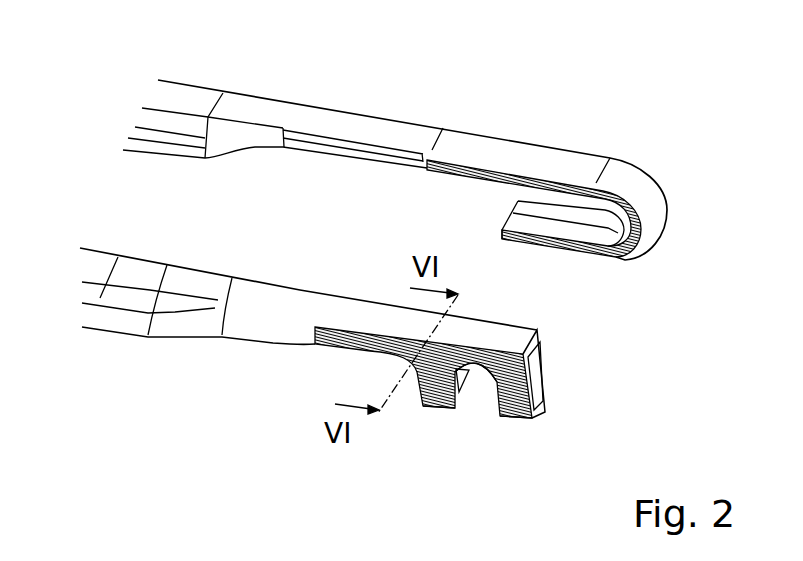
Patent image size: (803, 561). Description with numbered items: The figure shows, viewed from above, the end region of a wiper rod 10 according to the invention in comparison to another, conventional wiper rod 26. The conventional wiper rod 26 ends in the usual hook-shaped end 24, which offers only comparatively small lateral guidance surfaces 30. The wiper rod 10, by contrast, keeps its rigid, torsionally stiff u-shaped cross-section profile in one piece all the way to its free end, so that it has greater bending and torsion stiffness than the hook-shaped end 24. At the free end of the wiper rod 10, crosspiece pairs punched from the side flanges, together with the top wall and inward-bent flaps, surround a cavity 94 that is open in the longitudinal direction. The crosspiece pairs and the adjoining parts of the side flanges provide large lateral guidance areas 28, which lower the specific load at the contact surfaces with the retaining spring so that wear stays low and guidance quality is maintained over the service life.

The wiper rod 10 is at (122, 317).
The hook-shaped end 24 is at (641, 142).
The wiper rod 26 is at (187, 92).
The lateral guidance areas 28 is at (513, 413).
The lateral guidance surfaces 30 is at (622, 260).
The cavity 94 is at (472, 383).